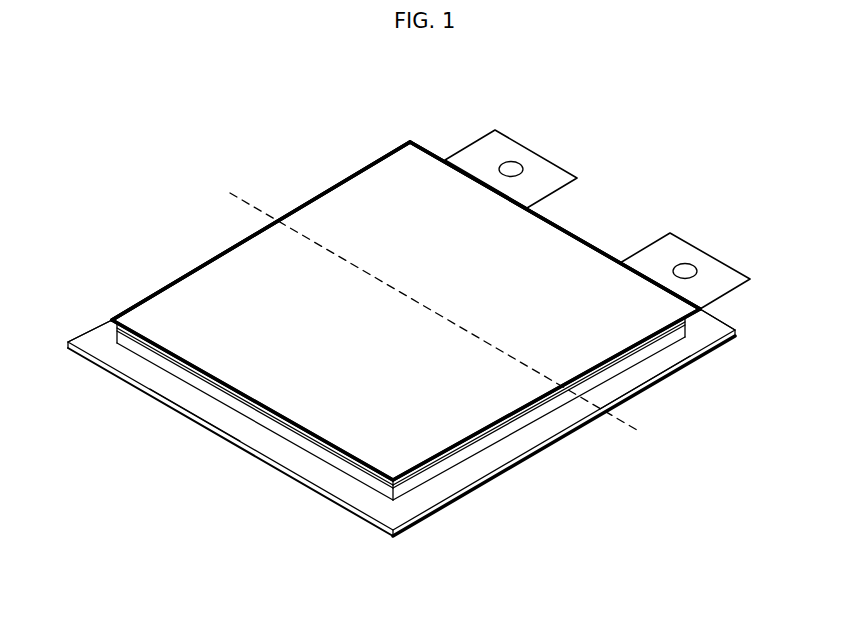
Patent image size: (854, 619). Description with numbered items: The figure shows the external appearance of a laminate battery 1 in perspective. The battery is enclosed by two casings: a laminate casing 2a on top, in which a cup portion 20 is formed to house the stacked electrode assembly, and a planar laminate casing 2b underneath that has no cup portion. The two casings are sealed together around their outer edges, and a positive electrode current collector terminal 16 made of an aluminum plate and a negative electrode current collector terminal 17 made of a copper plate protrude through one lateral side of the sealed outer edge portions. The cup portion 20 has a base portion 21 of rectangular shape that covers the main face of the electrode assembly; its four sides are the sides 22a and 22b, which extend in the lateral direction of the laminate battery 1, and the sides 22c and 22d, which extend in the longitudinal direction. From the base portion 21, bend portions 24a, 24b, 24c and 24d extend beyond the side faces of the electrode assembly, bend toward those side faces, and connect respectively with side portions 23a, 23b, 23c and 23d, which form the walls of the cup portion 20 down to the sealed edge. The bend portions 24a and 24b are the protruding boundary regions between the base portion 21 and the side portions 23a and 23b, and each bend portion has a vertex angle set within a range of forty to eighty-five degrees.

The laminate battery 1 is at (367, 146).
The laminate casing 2a is at (505, 447).
The laminate casing 2b is at (432, 513).
The positive electrode current collector terminal 16 is at (545, 172).
The negative electrode current collector terminal 17 is at (732, 283).
The cup portion 20 is at (258, 267).
The base portion 21 is at (348, 209).
The side 22a is at (543, 223).
The side 22b is at (305, 427).
The side 22c is at (187, 273).
The side 22d is at (470, 433).
The side portion 23a is at (702, 311).
The side portion 23b is at (195, 377).
The side portion 23c is at (108, 330).
The side portion 23d is at (640, 362).
The bend portion 24a is at (573, 236).
The bend portion 24b is at (253, 405).
The bend portion 24c is at (142, 293).
The bend portion 24d is at (457, 453).